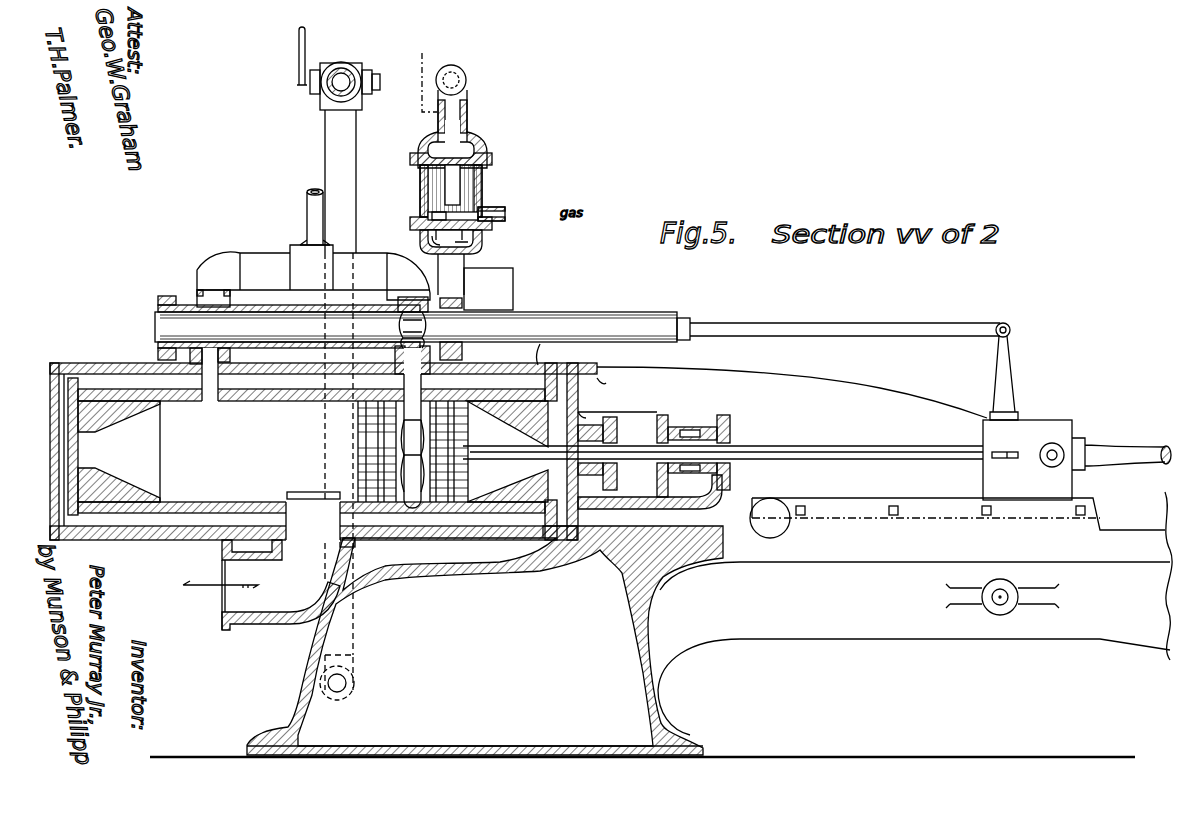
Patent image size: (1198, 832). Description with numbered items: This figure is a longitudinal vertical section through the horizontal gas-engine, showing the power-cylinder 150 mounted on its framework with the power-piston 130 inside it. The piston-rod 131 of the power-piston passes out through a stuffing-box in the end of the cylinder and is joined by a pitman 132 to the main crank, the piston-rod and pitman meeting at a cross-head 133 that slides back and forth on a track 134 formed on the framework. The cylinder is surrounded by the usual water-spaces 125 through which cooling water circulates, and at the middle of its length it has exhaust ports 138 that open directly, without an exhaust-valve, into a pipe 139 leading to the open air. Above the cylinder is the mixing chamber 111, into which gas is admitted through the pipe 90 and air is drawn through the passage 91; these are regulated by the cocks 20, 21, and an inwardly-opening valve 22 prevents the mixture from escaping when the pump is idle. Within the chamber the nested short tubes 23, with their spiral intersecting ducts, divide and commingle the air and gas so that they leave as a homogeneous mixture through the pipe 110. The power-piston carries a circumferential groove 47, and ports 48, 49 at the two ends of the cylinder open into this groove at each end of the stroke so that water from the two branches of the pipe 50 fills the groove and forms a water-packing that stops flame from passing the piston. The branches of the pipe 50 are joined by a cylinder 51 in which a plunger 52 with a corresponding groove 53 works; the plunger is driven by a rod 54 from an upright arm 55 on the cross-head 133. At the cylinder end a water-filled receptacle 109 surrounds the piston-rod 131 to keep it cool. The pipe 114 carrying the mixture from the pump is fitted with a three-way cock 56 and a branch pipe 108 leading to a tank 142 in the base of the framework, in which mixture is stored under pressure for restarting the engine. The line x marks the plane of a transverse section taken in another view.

The cock 20 is at (474, 250).
The cock 21 is at (436, 247).
The inwardly-opening valve 22 is at (432, 216).
The short tubes 23 is at (451, 144).
The circumferential groove 47 is at (412, 456).
The port 48 is at (210, 395).
The port 49 is at (413, 441).
The pipe 50 is at (307, 214).
The cylinder 51 is at (252, 306).
The plunger 52 is at (422, 327).
The circumferential groove 53 is at (428, 327).
The rod 54 is at (845, 324).
The upright arm 55 is at (1010, 388).
The three-way cock 56 is at (306, 45).
The pipe 90 is at (535, 211).
The passage 91 is at (430, 238).
The branch pipe 108 is at (352, 557).
The receptacle 109 is at (654, 460).
The pipe 110 is at (466, 80).
The chamber 111 is at (478, 192).
The pipe 114 is at (348, 66).
The water-spaces 125 is at (540, 490).
The power-piston 130 is at (413, 451).
The piston-rod 131 is at (803, 448).
The pitman 132 is at (1121, 454).
The cross-head 133 is at (1027, 460).
The track 134 is at (957, 518).
The exhaust ports 138 is at (306, 494).
The pipe 139 is at (261, 585).
The tank 142 is at (485, 640).
The power-cylinder 150 is at (259, 451).
The section line x is at (428, 74).